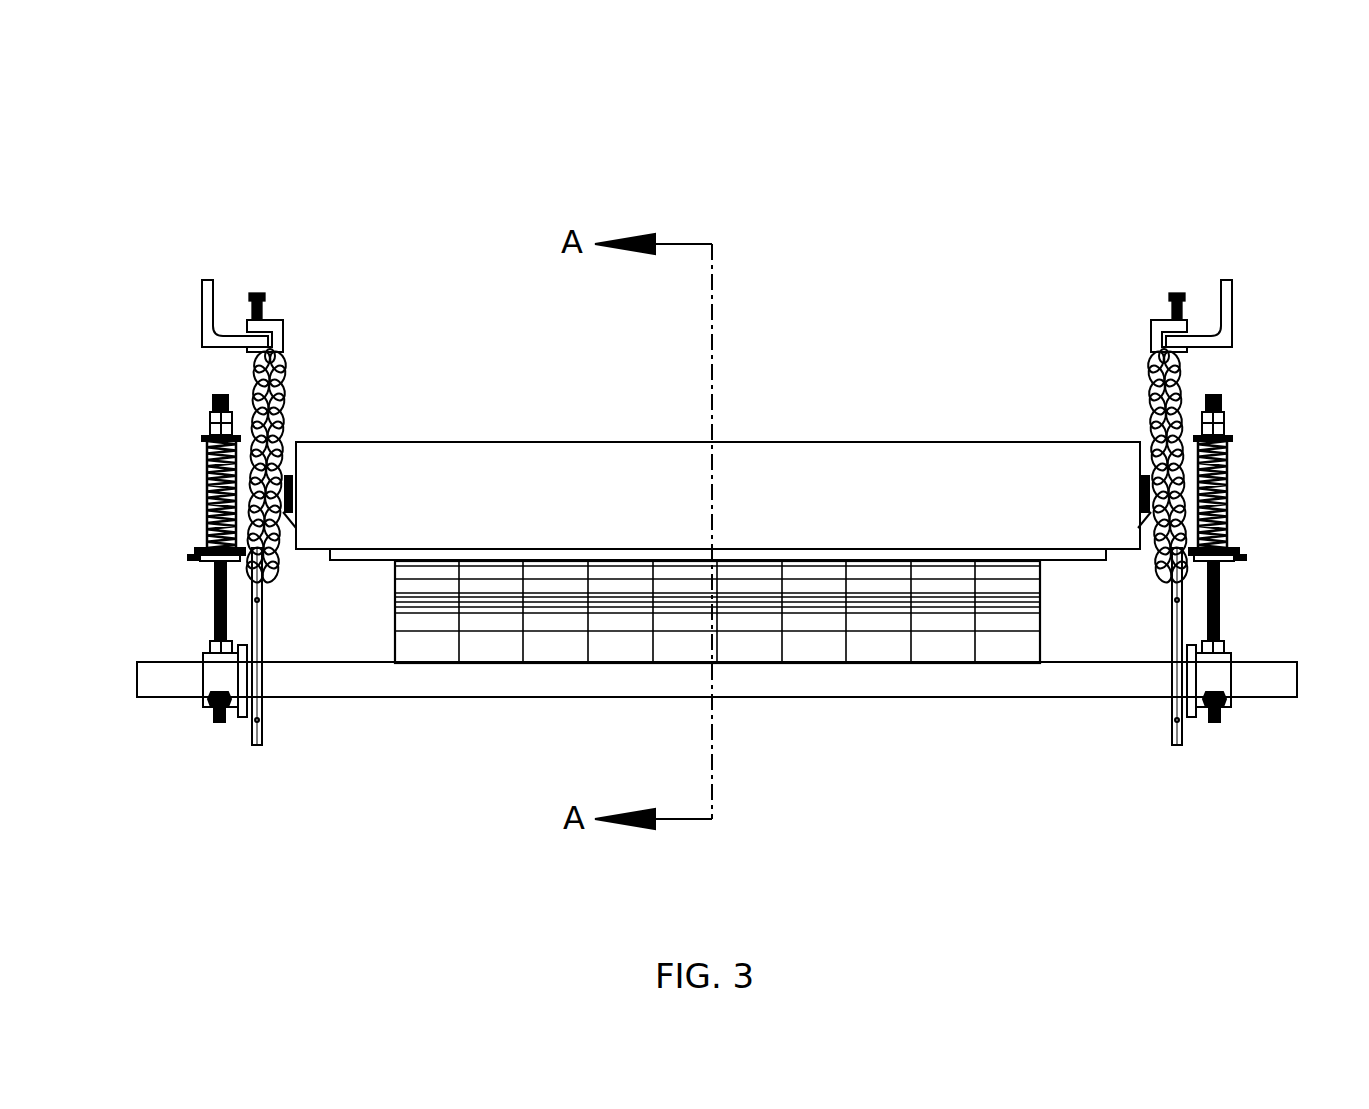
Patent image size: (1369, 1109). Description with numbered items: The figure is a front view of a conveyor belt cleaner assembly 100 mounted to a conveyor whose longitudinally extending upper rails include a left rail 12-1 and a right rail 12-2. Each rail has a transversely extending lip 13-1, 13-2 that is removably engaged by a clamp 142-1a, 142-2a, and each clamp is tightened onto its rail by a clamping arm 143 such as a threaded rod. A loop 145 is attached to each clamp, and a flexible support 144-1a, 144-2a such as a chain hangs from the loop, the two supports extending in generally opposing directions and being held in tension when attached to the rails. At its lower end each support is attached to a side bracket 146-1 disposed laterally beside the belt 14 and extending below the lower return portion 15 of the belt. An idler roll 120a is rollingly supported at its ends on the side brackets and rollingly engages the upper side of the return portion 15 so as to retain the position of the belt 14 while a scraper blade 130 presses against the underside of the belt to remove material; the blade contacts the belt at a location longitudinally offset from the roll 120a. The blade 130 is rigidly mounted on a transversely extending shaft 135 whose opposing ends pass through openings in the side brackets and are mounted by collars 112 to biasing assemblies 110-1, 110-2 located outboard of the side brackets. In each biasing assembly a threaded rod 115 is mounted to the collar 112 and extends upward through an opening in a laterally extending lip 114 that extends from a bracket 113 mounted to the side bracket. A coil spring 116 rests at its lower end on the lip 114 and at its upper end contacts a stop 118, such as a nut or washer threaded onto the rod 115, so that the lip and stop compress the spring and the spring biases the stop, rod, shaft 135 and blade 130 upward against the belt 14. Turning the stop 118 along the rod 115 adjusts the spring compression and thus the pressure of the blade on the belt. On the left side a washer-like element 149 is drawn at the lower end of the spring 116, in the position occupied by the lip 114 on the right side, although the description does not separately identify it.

The conveyor belt cleaner assembly 100 is at (130, 170).
The left rail 12-1 is at (202, 310).
The right rail 12-2 is at (1233, 302).
The lip of left rail 13-1 is at (253, 291).
The lip of right rail 13-2 is at (1190, 335).
The clamping arm 143 is at (262, 293).
The clamp 142-1a is at (283, 325).
The clamp 142-2a is at (1152, 330).
The loop 145 is at (286, 354).
The flexible support 144-1a is at (290, 396).
The flexible support 144-2a is at (1146, 395).
The first side bracket 146-1 is at (284, 548).
The belt 14 is at (435, 547).
The roll 120a is at (785, 442).
The scraper blade 130 is at (1045, 645).
The transversely extending shaft 135 is at (892, 697).
The biasing assembly 110-1 is at (86, 458).
The biasing assembly 110-2 is at (1264, 514).
The stop 118 is at (209, 434).
The spring 116 is at (207, 500).
The washer 149 is at (197, 558).
The lip 114 is at (1238, 560).
The rod 115 is at (214, 600).
The collar 112 is at (204, 682).
The lower return portion 15 is at (385, 560).
The bracket 113 is at (1180, 747).